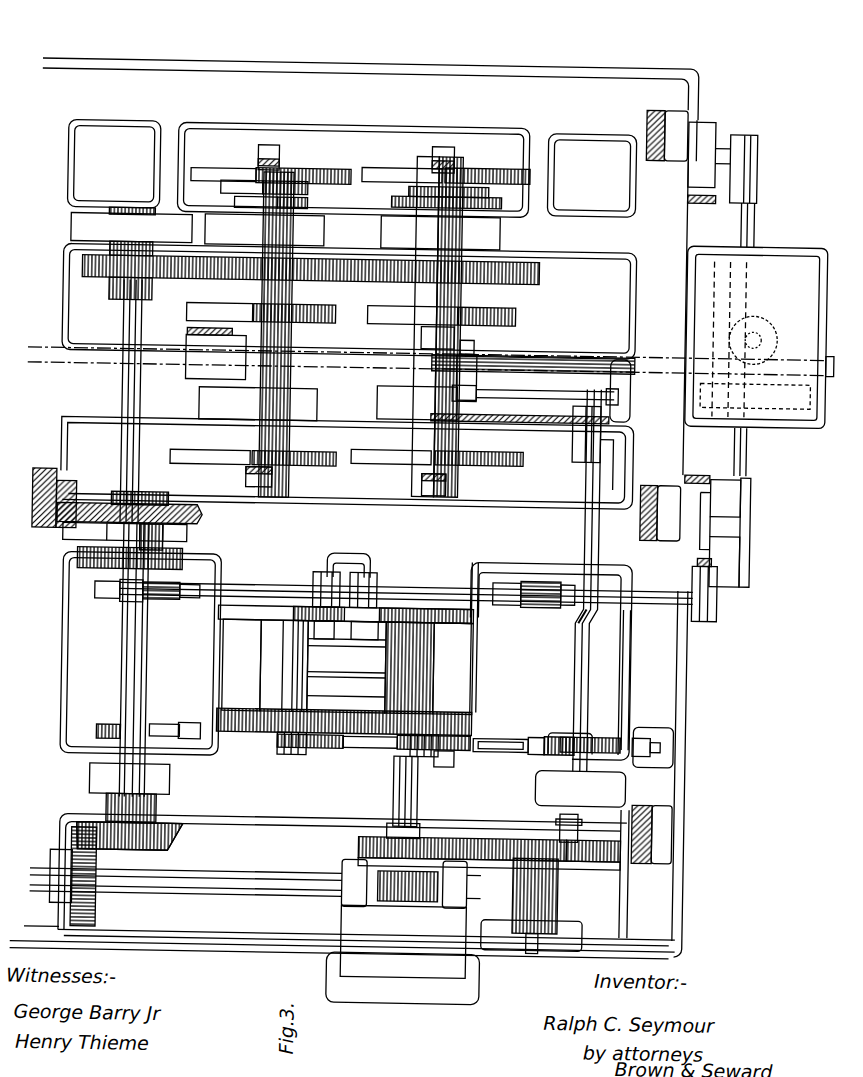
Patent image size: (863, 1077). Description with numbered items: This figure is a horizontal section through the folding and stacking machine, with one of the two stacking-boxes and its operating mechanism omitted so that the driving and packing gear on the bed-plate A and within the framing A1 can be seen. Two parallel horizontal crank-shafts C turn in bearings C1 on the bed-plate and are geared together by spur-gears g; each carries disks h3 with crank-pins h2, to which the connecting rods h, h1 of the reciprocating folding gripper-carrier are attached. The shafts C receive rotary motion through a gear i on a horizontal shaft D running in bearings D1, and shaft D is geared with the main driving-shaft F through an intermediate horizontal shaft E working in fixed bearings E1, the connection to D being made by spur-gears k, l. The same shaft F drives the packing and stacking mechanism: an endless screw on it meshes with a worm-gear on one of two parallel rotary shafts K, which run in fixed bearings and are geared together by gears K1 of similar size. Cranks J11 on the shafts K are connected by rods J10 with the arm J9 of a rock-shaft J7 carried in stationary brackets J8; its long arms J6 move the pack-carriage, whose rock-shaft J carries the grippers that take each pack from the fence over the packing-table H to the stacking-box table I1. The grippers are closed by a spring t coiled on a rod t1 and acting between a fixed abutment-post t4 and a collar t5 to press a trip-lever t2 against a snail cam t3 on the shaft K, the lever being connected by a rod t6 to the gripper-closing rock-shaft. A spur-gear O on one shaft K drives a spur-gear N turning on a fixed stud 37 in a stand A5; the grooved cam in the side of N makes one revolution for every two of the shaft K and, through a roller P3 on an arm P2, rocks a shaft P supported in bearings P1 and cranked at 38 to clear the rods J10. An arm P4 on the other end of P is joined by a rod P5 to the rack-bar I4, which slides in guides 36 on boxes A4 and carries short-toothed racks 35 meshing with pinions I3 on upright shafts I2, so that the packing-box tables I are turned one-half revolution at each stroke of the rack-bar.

The bed-plate A is at (66, 244).
The framing A1 is at (657, 100).
The boxes A4 is at (729, 340).
The stand A5 is at (532, 905).
The horizontal shafts C is at (426, 328).
The bearings C1 is at (349, 327).
The horizontal shaft D is at (134, 399).
The bearings D1 is at (132, 232).
The horizontal shaft E is at (150, 650).
The fixed bearings E1 is at (205, 505).
The horizontal shaft F is at (252, 892).
The spur-gears g is at (546, 276).
The packing-table H is at (403, 932).
The packing-box tables I is at (790, 238).
The stacking-box table I1 is at (790, 418).
The upright shafts I2 is at (761, 317).
The pinion I3 is at (760, 303).
The rack-bar I4 is at (590, 348).
The rock-shaft J is at (125, 848).
The long arms J6 is at (719, 309).
The rock-shaft J7 is at (755, 430).
The stationary brackets J8 is at (752, 135).
The arm J9 is at (726, 590).
The rod J10 is at (262, 587).
The cranks J11 is at (330, 568).
The rotary shafts K is at (406, 780).
The gears K1 is at (228, 690).
The spur-gear N is at (516, 832).
The spur-gear O is at (372, 840).
The rock-shaft P is at (593, 530).
The fixed bearings P1 is at (583, 606).
The arm P2 is at (573, 808).
The roller P3 is at (598, 852).
The arm P4 is at (638, 388).
The rod P5 is at (500, 386).
The gear h is at (355, 166).
The rods h1 is at (365, 323).
The crank-pins h2 is at (270, 141).
The disks h3 is at (350, 312).
The gear i is at (104, 278).
The spur-gear k is at (195, 592).
The spur-gear l is at (86, 560).
The spring t is at (631, 712).
The rod t1 is at (672, 737).
The trip-lever t2 is at (468, 752).
The cam t3 is at (300, 742).
The abutment-post t4 is at (650, 728).
The collar t5 is at (530, 731).
The rod t6 is at (560, 728).
The racks 35 is at (813, 351).
The guides 36 is at (755, 391).
The fixed stud 37 is at (548, 946).
The crank 38 is at (600, 610).